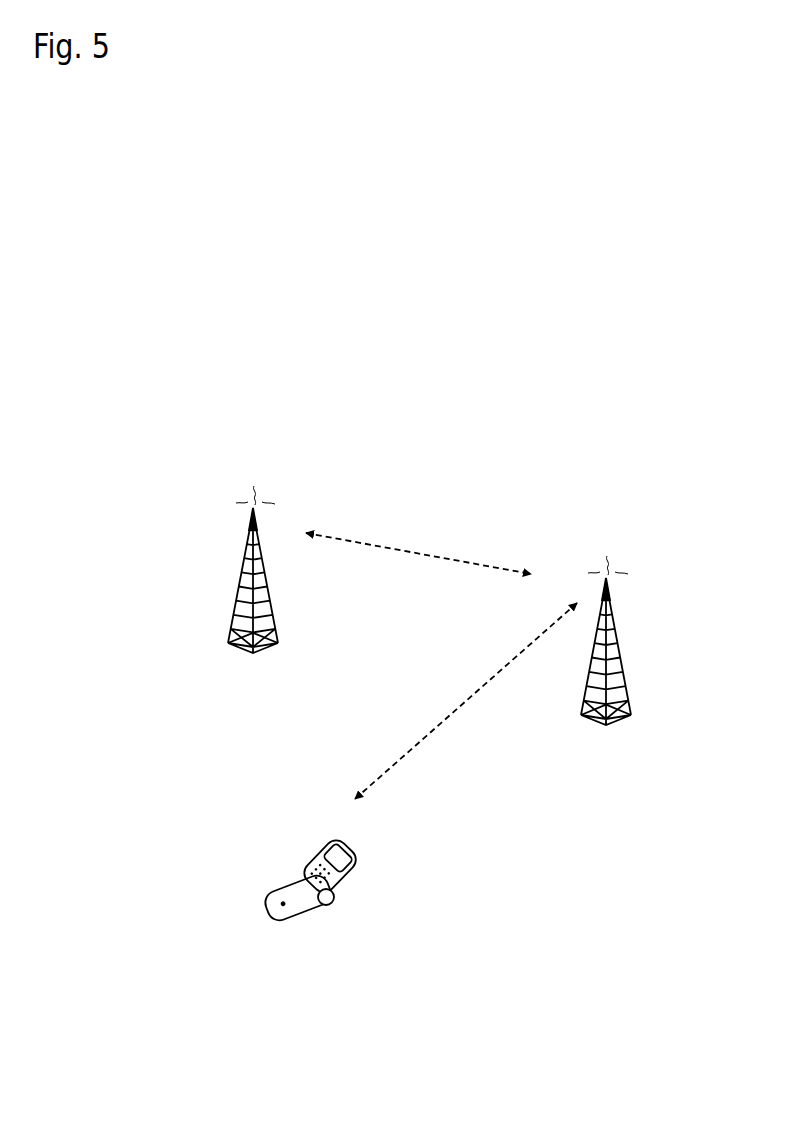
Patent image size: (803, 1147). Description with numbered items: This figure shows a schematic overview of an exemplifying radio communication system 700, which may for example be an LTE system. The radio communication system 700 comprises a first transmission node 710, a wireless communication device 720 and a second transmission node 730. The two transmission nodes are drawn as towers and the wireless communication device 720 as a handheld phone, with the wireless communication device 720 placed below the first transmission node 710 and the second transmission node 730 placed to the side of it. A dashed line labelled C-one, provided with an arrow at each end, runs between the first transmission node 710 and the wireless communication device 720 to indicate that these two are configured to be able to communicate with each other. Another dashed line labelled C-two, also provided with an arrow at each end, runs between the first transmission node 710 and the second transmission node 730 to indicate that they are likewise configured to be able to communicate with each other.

The radio communication system 700 is at (506, 414).
The first transmission node 710 is at (606, 660).
The wireless communication device 720 is at (288, 900).
The second transmission node 730 is at (229, 544).